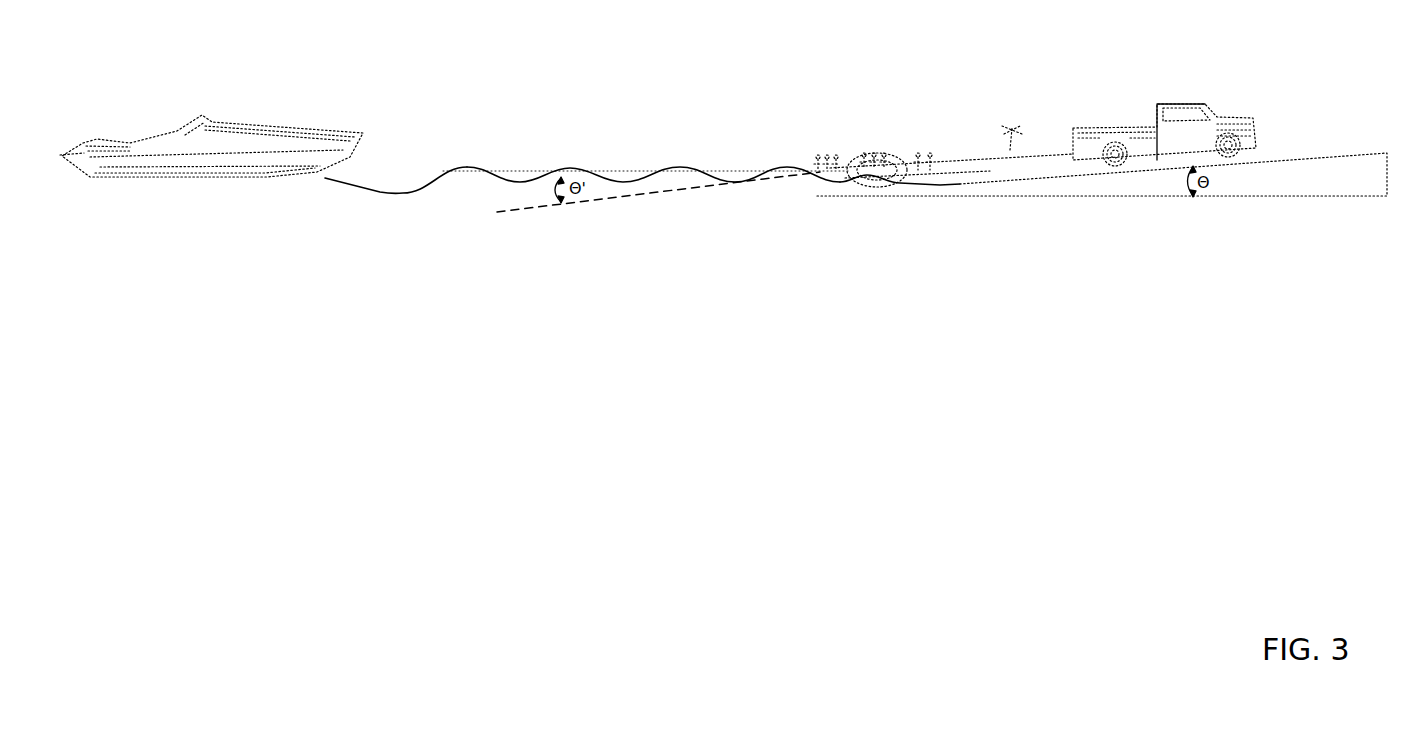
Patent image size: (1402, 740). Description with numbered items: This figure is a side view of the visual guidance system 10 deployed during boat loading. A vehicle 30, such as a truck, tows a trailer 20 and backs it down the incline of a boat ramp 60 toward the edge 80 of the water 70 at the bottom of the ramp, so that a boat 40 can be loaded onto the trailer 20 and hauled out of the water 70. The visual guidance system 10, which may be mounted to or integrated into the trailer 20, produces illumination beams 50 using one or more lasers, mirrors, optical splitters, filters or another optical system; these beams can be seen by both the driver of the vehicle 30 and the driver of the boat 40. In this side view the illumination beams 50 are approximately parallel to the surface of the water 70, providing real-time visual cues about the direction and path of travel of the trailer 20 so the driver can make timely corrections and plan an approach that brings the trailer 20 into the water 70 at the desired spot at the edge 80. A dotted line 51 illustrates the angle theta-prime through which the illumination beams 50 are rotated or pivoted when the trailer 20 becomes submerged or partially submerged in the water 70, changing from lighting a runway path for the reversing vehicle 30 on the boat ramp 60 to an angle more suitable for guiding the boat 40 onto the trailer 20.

The visual guidance system 10 is at (817, 173).
The trailer 20 is at (882, 153).
The vehicle 30 is at (1177, 103).
The boat 40 is at (270, 122).
The illumination beams 50 is at (593, 170).
The dotted line 51 is at (630, 195).
The boat ramp 60 is at (1281, 163).
The water 70 is at (404, 198).
The edge 80 is at (963, 199).